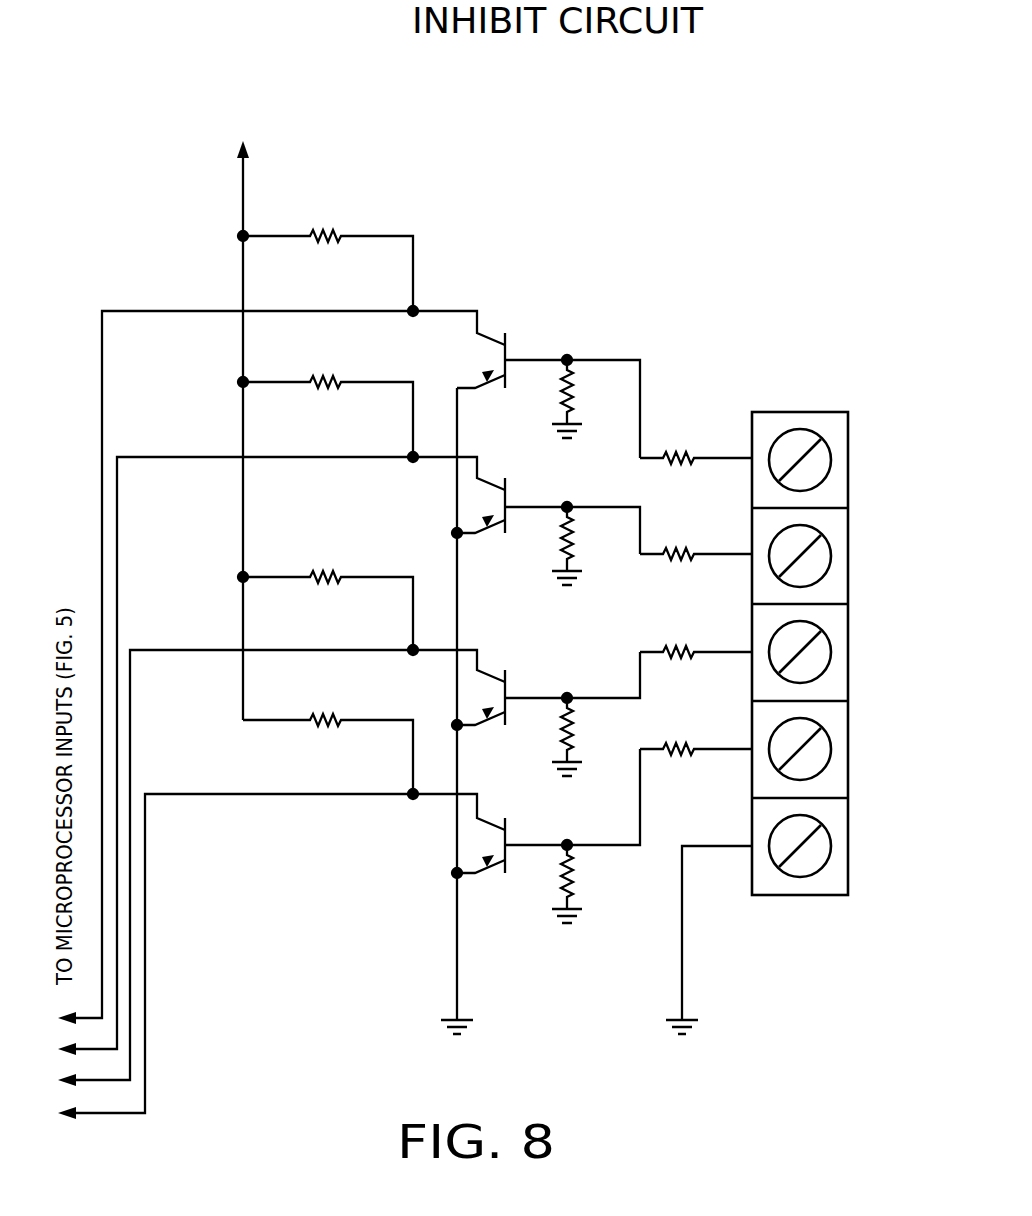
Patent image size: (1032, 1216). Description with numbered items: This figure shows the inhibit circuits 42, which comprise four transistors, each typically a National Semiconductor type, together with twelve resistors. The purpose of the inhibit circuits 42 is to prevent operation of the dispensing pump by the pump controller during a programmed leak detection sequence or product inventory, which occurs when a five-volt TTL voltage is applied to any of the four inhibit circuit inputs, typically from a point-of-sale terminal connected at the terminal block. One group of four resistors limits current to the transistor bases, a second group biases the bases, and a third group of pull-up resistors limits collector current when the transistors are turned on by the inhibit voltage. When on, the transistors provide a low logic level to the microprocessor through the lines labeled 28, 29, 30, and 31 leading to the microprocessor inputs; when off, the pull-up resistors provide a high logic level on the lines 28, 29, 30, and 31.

The inhibit circuits 42 is at (523, 228).
The microprocessor input line 28 is at (235, 667).
The microprocessor input line 29 is at (235, 756).
The microprocessor input line 30 is at (235, 868).
The microprocessor input line 31 is at (235, 956).